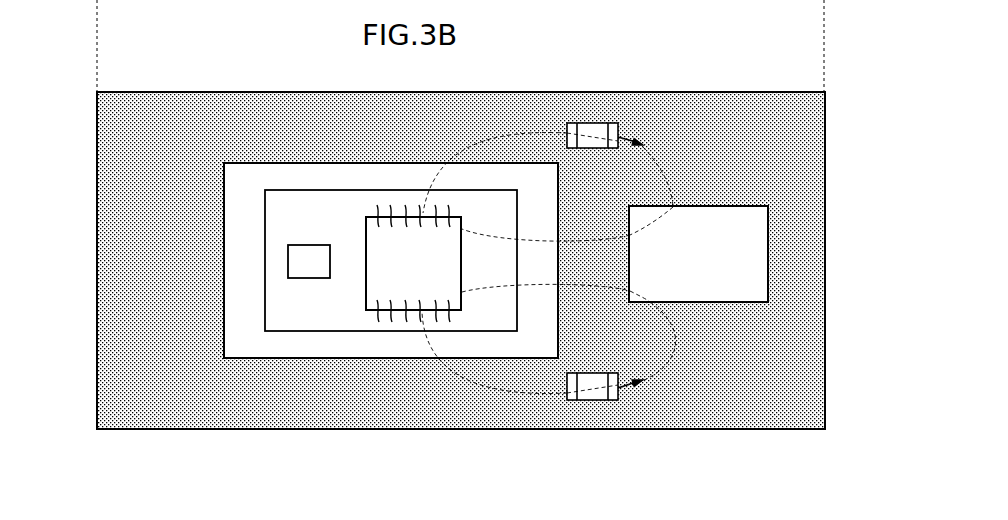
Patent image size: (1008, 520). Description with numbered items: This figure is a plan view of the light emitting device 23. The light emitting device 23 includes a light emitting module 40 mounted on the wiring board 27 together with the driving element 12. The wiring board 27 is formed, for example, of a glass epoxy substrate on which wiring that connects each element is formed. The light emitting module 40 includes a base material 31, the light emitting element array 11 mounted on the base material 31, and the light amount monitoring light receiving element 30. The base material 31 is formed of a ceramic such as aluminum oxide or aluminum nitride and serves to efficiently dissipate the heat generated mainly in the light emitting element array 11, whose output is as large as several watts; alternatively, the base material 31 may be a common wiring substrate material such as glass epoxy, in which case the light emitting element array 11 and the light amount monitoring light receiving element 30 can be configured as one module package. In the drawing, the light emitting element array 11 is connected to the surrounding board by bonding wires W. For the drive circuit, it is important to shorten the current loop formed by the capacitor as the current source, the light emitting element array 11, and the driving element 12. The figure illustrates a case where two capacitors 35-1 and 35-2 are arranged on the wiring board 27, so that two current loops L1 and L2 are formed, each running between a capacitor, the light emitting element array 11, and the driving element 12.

The light emitting element array 11 is at (362, 238).
The driving element 12 is at (747, 218).
The light emitting device 23 is at (618, 62).
The wiring board 27 is at (826, 292).
The light amount monitoring light receiving element 30 is at (307, 280).
The base material 31 is at (277, 313).
The capacitor 35-1 is at (617, 400).
The capacitor 35-2 is at (574, 123).
The light emitting module 40 is at (248, 295).
The bonding wire W is at (379, 212).
The current loop L1 is at (657, 389).
The current loop L2 is at (657, 141).